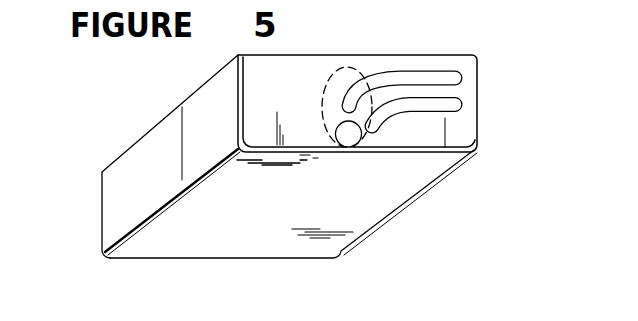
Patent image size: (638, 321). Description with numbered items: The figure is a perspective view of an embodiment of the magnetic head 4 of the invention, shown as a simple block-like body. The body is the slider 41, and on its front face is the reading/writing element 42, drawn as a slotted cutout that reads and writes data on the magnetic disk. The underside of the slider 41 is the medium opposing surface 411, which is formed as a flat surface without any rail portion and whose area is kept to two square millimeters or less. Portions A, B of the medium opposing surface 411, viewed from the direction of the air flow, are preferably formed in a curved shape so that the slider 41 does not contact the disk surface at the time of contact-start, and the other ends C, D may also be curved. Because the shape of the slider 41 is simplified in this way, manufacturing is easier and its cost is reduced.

The magnetic head 4 is at (283, 164).
The slider 41 is at (160, 157).
The reading/writing element 42 is at (341, 70).
The medium opposing surface 411 is at (210, 202).
The portion of the medium opposing surface A is at (313, 258).
The portion of the medium opposing surface B is at (413, 150).
The other end of the medium opposing surface C is at (153, 218).
The other end of the medium opposing surface D is at (437, 178).